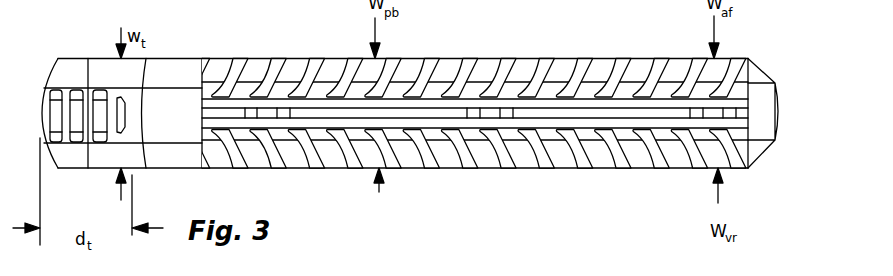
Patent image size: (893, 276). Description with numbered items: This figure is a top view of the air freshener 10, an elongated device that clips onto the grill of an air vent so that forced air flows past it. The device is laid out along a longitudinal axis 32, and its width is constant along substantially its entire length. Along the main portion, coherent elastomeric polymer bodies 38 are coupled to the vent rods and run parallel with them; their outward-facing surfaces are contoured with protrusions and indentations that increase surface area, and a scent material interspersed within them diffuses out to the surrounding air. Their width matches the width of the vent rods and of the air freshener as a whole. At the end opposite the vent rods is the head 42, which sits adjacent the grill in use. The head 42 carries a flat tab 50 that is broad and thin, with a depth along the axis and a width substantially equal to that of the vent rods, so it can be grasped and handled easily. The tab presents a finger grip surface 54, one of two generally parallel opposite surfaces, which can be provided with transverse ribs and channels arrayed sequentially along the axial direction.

The air freshener device 10 is at (424, 121).
The longitudinal axis 32 is at (807, 109).
The coherent elastomeric polymer bodies 38 is at (492, 72).
The head 42 is at (98, 58).
The flat tab 50 is at (62, 75).
The finger grip surface 54 is at (98, 152).